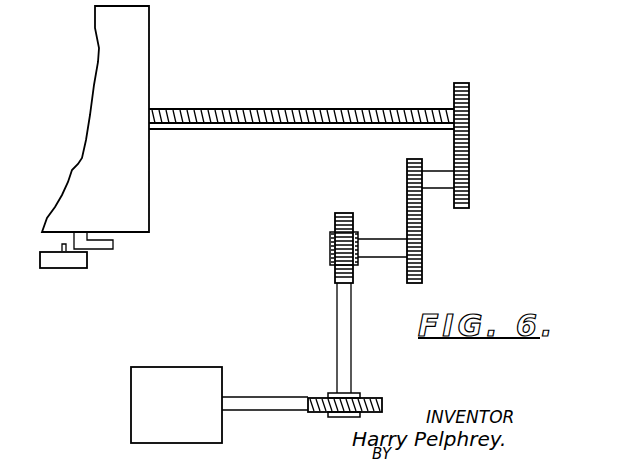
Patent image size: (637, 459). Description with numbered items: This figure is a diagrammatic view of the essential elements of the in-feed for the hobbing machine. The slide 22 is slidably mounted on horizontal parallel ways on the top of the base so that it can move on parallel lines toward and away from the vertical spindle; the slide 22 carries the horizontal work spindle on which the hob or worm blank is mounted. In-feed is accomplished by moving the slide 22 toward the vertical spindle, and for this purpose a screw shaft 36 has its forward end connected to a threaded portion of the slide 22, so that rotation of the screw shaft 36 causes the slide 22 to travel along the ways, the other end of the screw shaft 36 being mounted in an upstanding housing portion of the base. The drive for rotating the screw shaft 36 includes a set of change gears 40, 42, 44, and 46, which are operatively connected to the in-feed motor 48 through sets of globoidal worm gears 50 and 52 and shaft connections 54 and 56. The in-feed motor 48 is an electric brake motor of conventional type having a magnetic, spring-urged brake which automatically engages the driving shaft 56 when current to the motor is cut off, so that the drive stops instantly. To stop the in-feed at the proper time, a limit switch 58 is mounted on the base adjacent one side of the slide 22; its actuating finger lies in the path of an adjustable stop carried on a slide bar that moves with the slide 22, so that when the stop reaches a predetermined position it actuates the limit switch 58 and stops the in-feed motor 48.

The slide 22 is at (135, 37).
The screw shaft 36 is at (218, 114).
The change gear 40 is at (469, 112).
The change gear 42 is at (467, 195).
The change gear 44 is at (407, 181).
The change gear 46 is at (423, 256).
The in-feed motor 48 is at (157, 375).
The globoidal worm gear set 50 is at (334, 258).
The globoidal worm gear set 52 is at (358, 397).
The shaft connection 54 is at (347, 331).
The driving shaft 56 is at (262, 397).
The limit switch 58 is at (70, 265).